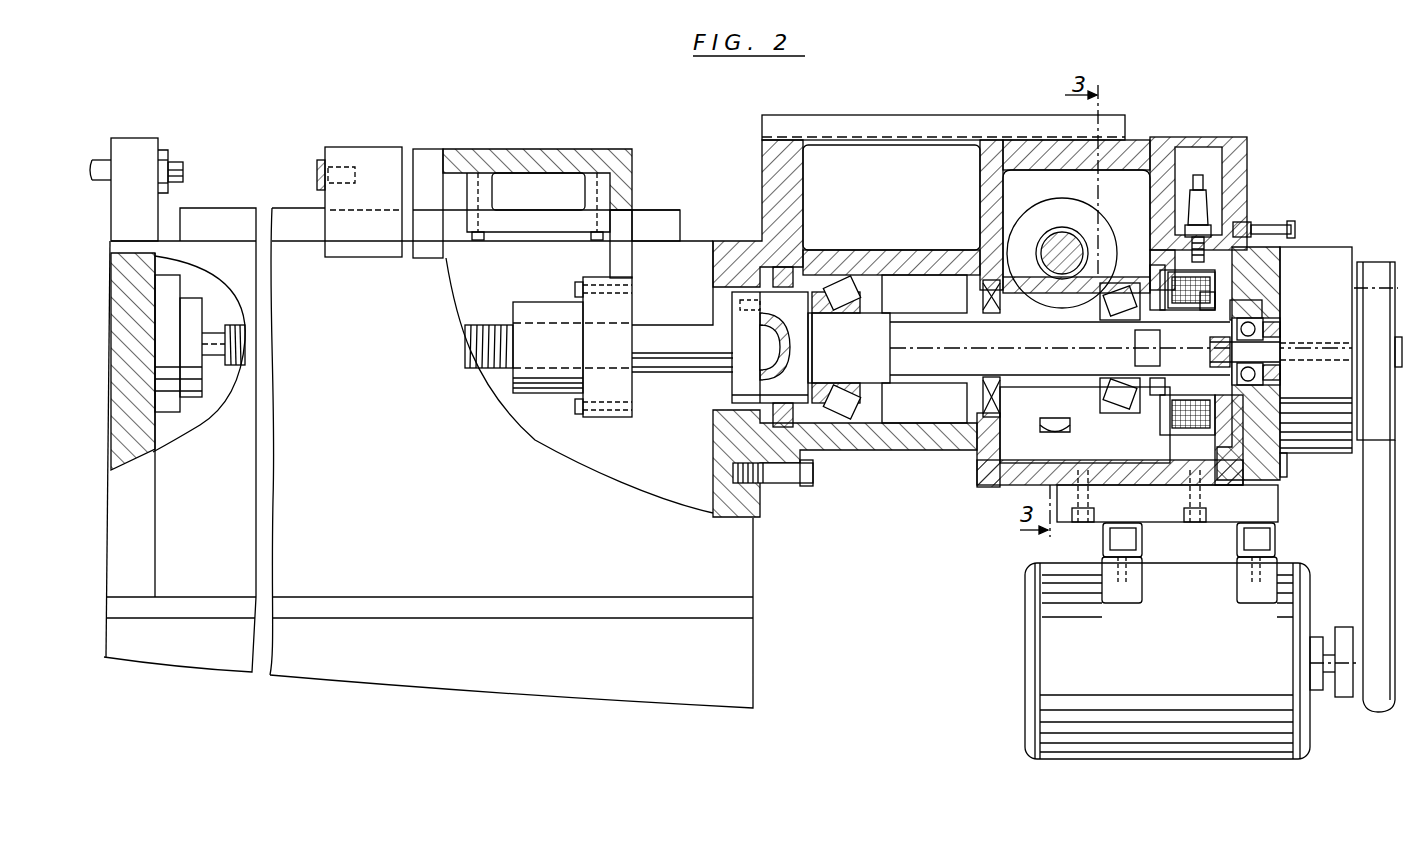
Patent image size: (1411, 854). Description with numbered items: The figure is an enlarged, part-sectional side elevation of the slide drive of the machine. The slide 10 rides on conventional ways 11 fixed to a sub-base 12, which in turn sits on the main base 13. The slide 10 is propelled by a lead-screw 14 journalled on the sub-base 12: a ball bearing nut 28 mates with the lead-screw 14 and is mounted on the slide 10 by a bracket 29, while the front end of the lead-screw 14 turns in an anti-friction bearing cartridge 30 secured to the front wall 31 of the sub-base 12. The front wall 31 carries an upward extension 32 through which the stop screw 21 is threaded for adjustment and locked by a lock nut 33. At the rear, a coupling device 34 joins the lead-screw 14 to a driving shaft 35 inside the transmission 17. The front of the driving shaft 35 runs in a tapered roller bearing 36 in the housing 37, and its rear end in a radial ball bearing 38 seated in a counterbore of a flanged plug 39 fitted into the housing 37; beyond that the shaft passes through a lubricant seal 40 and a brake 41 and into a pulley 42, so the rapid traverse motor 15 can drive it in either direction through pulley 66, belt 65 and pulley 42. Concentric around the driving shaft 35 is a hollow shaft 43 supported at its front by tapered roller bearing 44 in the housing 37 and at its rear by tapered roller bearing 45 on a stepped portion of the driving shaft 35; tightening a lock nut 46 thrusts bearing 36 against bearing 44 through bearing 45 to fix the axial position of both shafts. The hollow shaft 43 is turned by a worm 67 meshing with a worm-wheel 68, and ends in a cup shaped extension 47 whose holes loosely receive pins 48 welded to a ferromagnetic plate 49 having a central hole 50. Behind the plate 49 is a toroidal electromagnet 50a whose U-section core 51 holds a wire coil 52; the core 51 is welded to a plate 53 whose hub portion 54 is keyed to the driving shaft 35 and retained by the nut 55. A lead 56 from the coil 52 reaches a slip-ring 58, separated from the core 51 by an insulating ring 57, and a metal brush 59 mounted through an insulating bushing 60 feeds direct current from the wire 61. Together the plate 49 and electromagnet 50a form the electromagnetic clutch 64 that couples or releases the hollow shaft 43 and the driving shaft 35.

The slide 10 is at (598, 163).
The ways 11 is at (652, 218).
The sub-base 12 is at (748, 551).
The main base 13 is at (748, 655).
The lead-screw 14 is at (468, 350).
The rapid traverse motor 15 is at (1034, 660).
The transmission 17 is at (1139, 141).
The stop screw 21 is at (184, 178).
The ball bearing nut 28 is at (560, 382).
The bracket 29 is at (620, 390).
The anti-friction bearing cartridge 30 is at (186, 383).
The front wall 31 is at (143, 437).
The upward extension 32 is at (142, 147).
The lock nut 33 is at (162, 152).
The coupling device 34 is at (737, 318).
The driving shaft 35 is at (922, 358).
The tapered roller bearing 36 is at (848, 423).
The housing 37 is at (770, 226).
The radial ball bearing 38 is at (1263, 381).
The flanged plug 39 is at (1245, 243).
The lubricant seal 40 is at (1263, 332).
The brake 41 is at (1335, 250).
The pulley 42 is at (1378, 265).
The hollow shaft 43 is at (980, 312).
The tapered roller bearing 44 is at (983, 407).
The tapered roller bearing 45 is at (1127, 368).
The lock nut 46 is at (1128, 392).
The cup shaped extension 47 is at (1112, 395).
The pins 48 is at (1155, 290).
The plate 49 is at (1157, 445).
The central hole 50 is at (1155, 337).
The toroidal electromagnet 50a is at (1216, 300).
The toroidal core 51 is at (1195, 430).
The wire coil 52 is at (1216, 282).
The plate 53 is at (1282, 392).
The hub portion 54 is at (1160, 382).
The nut 55 is at (1235, 318).
The lead 56 is at (1245, 224).
The insulating ring 57 is at (1180, 267).
The slip-ring 58 is at (1177, 432).
The metal brush 59 is at (1183, 277).
The insulating bushing 60 is at (1200, 208).
The wire 61 is at (1205, 215).
The electromagnetic clutch 64 is at (1262, 240).
The belt 65 is at (1362, 495).
The pulley 66 is at (1390, 700).
The worm 67 is at (1065, 238).
The worm-wheel 68 is at (1055, 430).